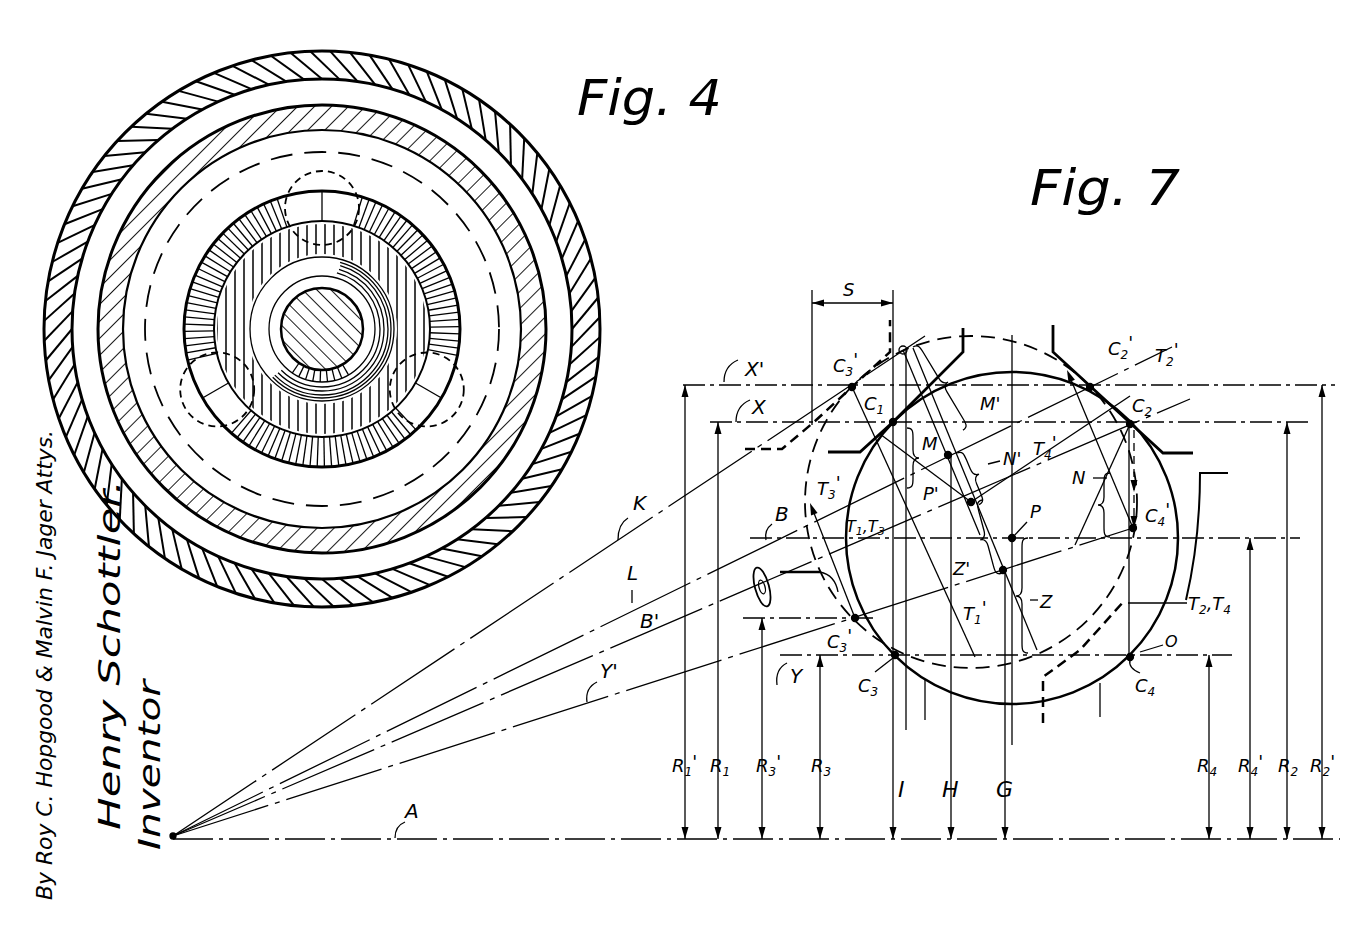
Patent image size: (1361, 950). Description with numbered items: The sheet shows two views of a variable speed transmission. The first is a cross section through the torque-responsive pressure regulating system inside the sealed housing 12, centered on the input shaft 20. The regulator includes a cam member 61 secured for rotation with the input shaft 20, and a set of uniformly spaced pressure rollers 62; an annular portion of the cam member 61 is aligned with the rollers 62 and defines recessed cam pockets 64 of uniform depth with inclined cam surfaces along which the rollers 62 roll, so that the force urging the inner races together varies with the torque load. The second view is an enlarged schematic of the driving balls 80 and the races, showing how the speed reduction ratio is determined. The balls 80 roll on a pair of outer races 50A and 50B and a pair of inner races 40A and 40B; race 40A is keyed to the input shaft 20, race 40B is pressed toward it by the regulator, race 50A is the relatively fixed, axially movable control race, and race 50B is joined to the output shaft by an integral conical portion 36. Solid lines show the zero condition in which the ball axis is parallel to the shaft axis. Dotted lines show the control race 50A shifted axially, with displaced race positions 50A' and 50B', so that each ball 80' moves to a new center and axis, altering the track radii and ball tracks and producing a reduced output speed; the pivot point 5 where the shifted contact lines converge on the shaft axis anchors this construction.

In FIG. 4, the sealed housing 12 is at (556, 196).
In FIG. 4, the integral conical portion 36 is at (547, 293).
In FIG. 4, the cam member 61 is at (428, 258).
In FIG. 4, the cam pockets 64 is at (281, 212).
In FIG. 4, the pressure rollers 62 is at (352, 193).
In FIG. 4, the input shaft 20 is at (337, 353).
In FIG. 7, the pivot point 5 is at (755, 600).
In FIG. 7, the driving balls 80 is at (1012, 562).
In FIG. 7, the driving ball in shifted position 80' is at (971, 472).
In FIG. 7, the outer drive race 50A is at (913, 356).
In FIG. 7, the displaced stator pole 50A' is at (841, 355).
In FIG. 7, the outer drive race 50B is at (1123, 374).
In FIG. 7, the displaced stator pole 50B' is at (1084, 681).
In FIG. 7, the inner drive race 40A is at (794, 589).
In FIG. 7, the inner drive race 40B is at (1202, 512).